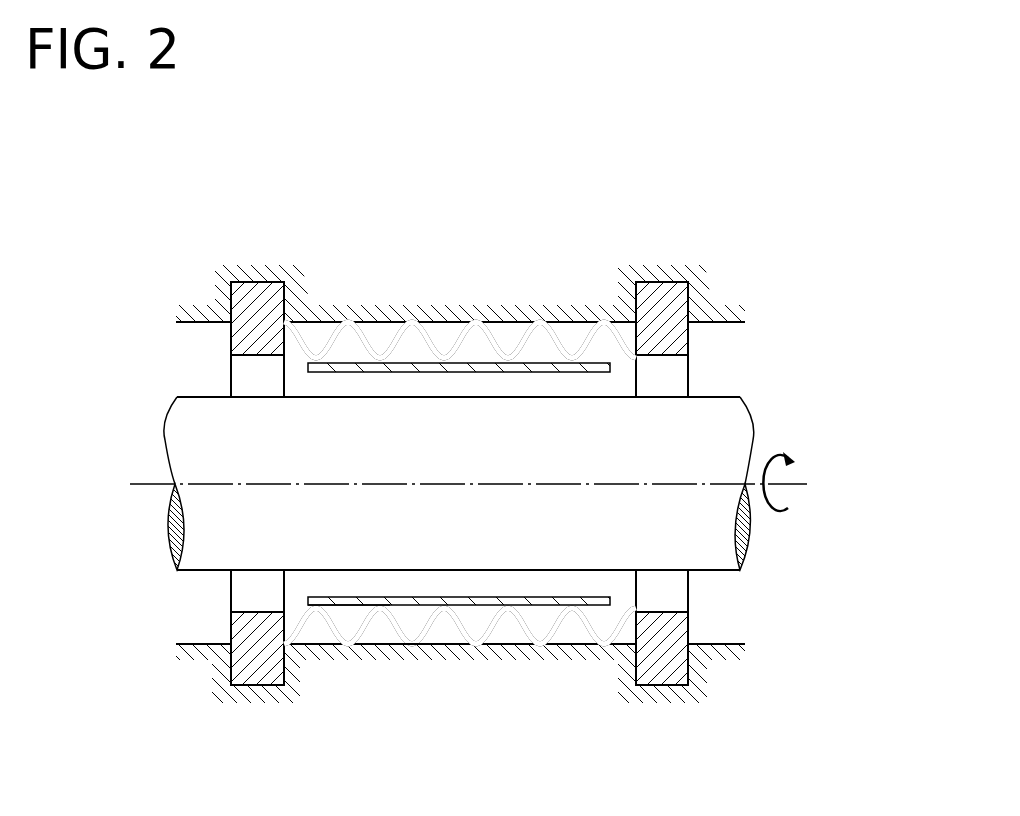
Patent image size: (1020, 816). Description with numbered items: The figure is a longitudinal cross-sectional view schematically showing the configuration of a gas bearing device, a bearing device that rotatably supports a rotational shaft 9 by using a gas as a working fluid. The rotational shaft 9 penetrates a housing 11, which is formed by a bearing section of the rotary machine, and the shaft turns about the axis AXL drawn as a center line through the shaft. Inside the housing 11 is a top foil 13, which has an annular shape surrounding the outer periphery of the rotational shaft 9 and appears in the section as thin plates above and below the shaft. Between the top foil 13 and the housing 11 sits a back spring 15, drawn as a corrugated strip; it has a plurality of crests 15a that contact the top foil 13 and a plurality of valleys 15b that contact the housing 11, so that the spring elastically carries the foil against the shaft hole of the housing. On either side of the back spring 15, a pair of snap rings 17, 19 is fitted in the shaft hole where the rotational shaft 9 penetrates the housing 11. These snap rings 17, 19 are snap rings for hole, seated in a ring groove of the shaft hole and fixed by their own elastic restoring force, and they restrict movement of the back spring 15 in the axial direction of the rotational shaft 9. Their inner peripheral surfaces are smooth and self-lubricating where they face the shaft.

The rotational shaft 9 is at (523, 410).
The housing 11 is at (482, 650).
The top foil 13 is at (541, 598).
The back spring 15 is at (371, 623).
The crests 15a is at (369, 600).
The valleys 15b is at (421, 653).
The snap ring 17 is at (660, 670).
The snap ring 19 is at (258, 670).
The rotation axis AXL is at (790, 484).